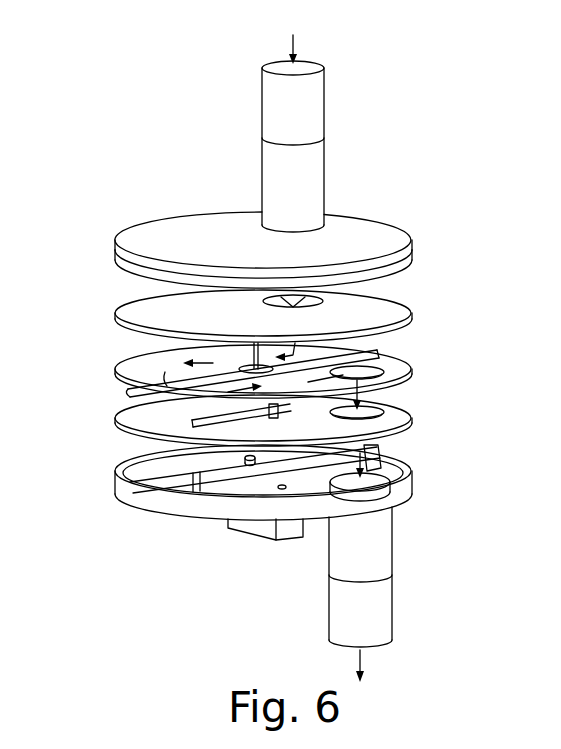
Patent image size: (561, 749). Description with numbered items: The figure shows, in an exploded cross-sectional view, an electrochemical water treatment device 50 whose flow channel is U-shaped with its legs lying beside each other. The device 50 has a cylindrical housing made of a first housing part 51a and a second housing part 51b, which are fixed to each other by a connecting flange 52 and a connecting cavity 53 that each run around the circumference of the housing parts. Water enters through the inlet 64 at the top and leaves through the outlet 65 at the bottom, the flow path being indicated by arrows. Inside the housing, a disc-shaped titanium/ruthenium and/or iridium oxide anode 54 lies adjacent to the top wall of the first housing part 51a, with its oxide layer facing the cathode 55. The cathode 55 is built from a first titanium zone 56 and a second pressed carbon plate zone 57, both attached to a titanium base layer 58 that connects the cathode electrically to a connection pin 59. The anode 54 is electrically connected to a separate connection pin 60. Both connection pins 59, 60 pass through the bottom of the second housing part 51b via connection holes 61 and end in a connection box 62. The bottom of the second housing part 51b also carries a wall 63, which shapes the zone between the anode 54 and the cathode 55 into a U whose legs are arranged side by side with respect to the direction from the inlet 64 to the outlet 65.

The device 50 is at (498, 98).
The inlet 64 is at (308, 110).
The first housing part 51a is at (398, 257).
The connecting cavity 53 is at (408, 268).
The anode 54 is at (398, 312).
The first titanium zone 56 is at (130, 310).
The cathode 55 is at (420, 370).
The second pressed carbon plate zone 57 is at (402, 372).
The titanium base layer 58 is at (117, 370).
The connection pin 60 is at (253, 368).
The second housing part 51b is at (402, 487).
The connection pin 59 is at (122, 473).
The wall 63 is at (287, 470).
The connection holes 61 is at (277, 418).
The connecting flange 52 is at (408, 466).
The connection box 62 is at (267, 530).
The outlet 65 is at (373, 602).